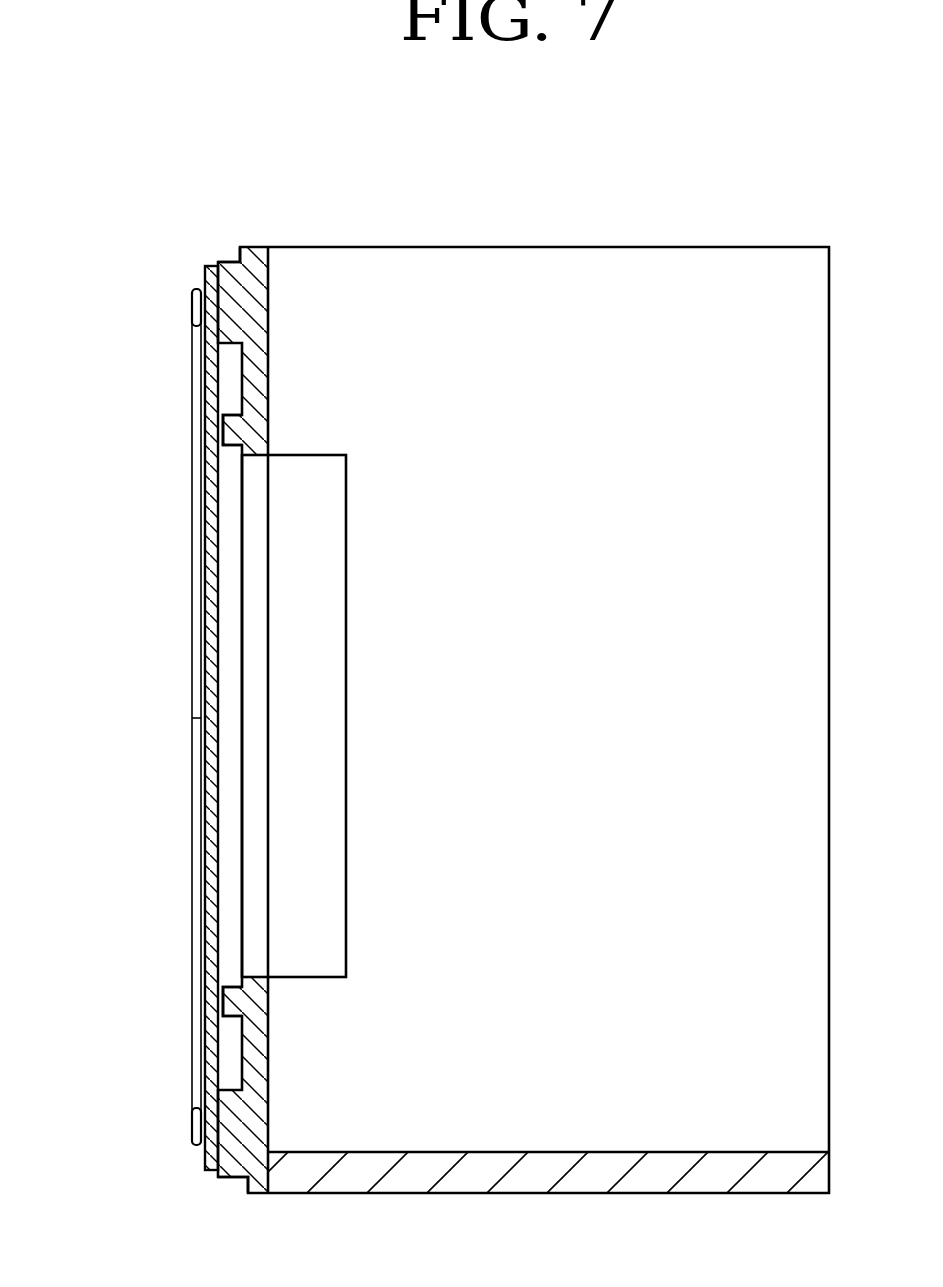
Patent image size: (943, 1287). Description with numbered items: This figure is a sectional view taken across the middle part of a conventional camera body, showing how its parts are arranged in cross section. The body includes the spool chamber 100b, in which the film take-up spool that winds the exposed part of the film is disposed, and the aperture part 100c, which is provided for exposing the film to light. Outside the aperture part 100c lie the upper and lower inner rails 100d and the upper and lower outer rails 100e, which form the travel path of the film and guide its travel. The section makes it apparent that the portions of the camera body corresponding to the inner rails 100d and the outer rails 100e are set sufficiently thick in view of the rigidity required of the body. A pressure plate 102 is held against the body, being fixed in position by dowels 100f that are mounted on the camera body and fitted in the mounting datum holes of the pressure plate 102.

The spool chamber 100b is at (563, 248).
The aperture part 100c is at (263, 457).
The inner rails 100d is at (233, 429).
The outer rails 100e is at (233, 273).
The dowels 100f is at (196, 311).
The pressure plate 102 is at (207, 279).